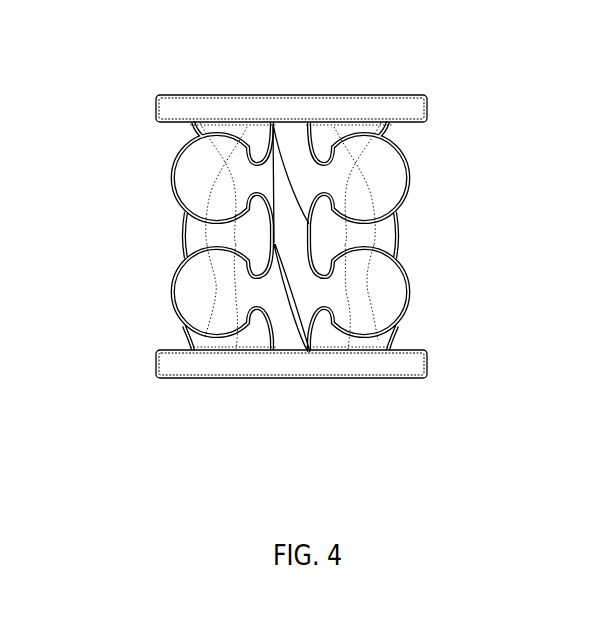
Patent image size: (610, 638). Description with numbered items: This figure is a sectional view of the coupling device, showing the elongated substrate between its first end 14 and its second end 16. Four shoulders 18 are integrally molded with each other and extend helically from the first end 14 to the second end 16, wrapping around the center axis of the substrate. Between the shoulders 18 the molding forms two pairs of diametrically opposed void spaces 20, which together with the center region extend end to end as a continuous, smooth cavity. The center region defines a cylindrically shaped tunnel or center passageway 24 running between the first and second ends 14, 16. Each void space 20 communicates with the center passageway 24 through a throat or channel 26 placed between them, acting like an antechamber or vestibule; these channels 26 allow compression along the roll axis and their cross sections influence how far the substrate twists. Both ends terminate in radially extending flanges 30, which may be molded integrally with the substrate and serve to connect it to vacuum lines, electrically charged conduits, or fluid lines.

The first end 14 is at (243, 120).
The second end 16 is at (187, 355).
The shoulders 18 is at (392, 244).
The void spaces 20 is at (370, 287).
The center passageway 24 is at (291, 343).
The channel 26 is at (325, 182).
The flanges 30 is at (352, 104).